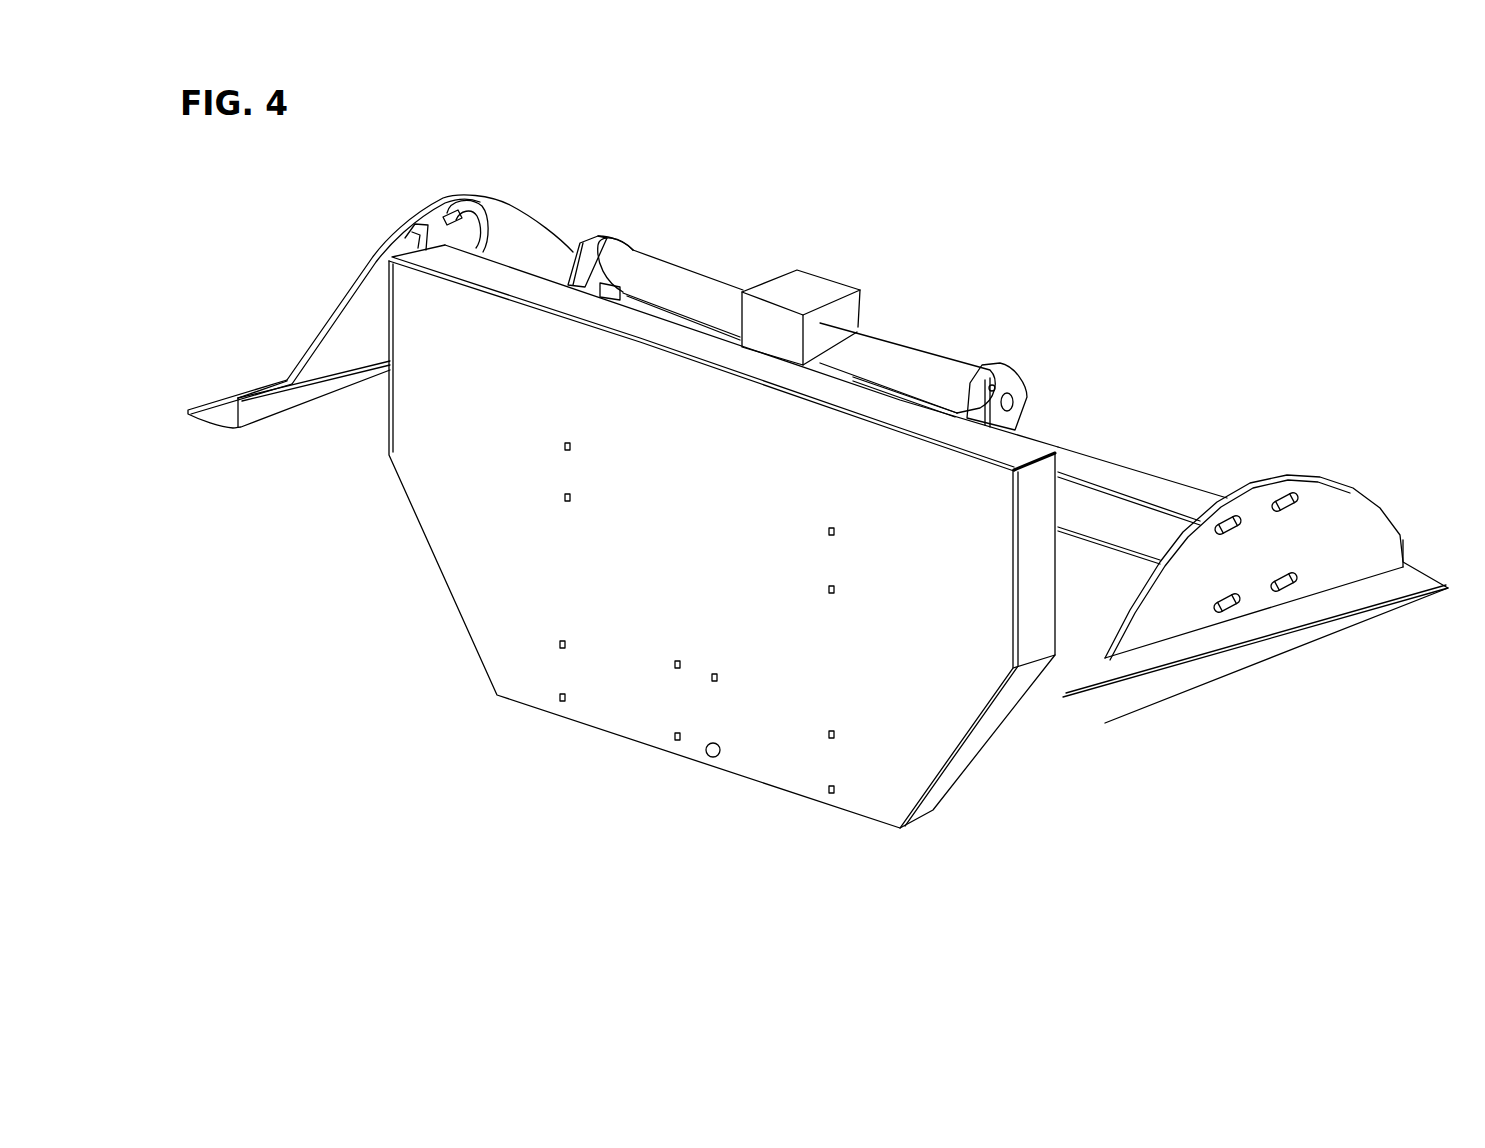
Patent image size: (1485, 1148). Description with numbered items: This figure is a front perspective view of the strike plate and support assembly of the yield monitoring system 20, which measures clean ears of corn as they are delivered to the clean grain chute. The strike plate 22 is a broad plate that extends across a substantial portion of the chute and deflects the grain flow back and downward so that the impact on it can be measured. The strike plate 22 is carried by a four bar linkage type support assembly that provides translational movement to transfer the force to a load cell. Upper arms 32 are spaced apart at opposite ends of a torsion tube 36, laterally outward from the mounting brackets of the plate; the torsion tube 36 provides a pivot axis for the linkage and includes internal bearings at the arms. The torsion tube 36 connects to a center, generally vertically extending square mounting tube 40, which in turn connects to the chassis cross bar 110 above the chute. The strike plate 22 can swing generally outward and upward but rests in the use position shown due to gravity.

The yield monitoring system 20 is at (818, 523).
The strike plate 22 is at (881, 787).
The upper arms 32 is at (597, 242).
The torsion tube 36 is at (668, 280).
The center mounting tube 40 is at (812, 290).
The chassis cross bar 110 is at (1127, 482).